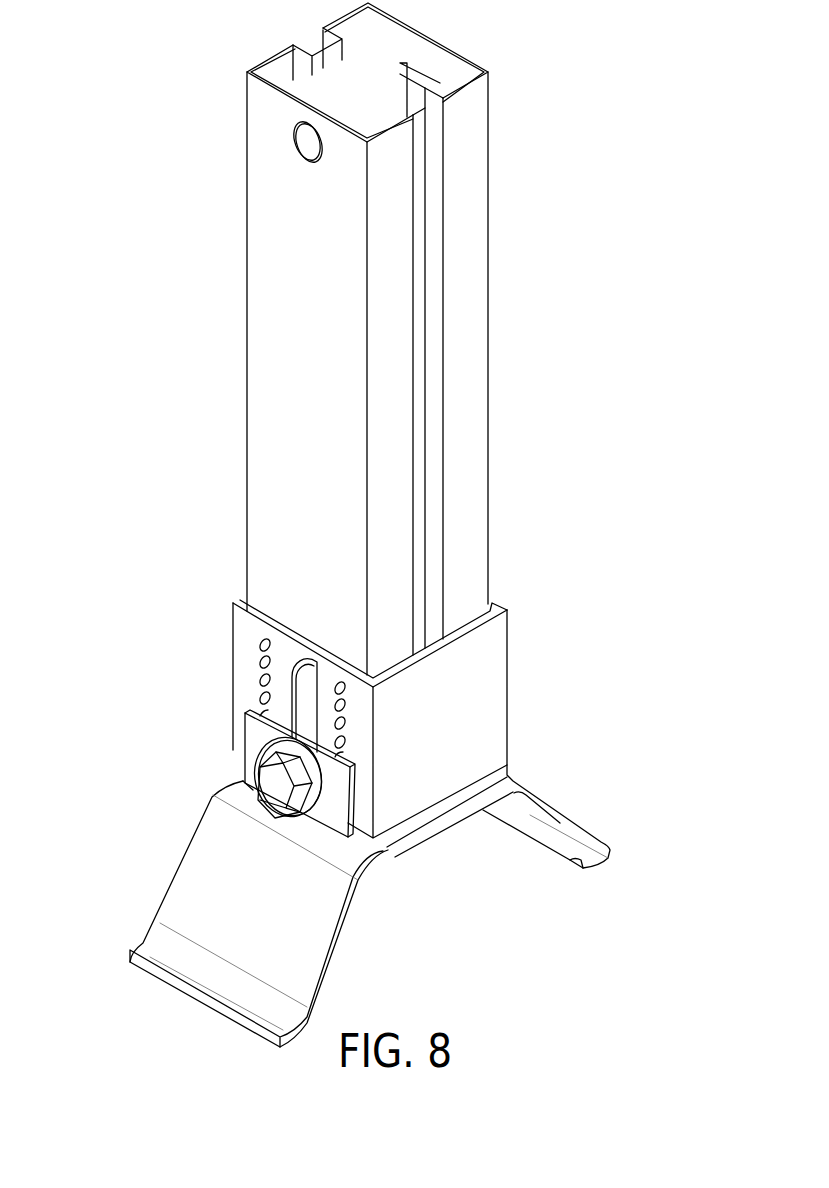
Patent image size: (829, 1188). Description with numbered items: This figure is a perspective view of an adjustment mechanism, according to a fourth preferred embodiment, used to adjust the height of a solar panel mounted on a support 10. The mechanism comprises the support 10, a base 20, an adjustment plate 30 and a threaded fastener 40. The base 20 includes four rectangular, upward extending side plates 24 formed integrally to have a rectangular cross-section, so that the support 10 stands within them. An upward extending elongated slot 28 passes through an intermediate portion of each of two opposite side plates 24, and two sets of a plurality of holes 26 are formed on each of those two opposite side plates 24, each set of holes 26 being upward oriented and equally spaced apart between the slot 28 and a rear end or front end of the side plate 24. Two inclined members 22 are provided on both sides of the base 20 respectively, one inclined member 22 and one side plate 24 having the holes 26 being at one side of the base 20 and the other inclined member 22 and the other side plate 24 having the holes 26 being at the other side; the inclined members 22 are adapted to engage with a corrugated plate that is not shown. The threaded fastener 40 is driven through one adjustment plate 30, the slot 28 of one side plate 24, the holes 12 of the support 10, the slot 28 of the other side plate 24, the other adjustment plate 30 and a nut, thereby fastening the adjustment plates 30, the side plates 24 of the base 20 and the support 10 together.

The support 10 is at (493, 315).
The holes 12 is at (295, 150).
The base 20 is at (620, 847).
The inclined member 22 is at (567, 820).
The side plate 24 is at (257, 635).
The holes 26 is at (260, 680).
The elongated slot 28 is at (290, 672).
The adjustment plate 30 is at (338, 810).
The threaded fastener 40 is at (273, 793).